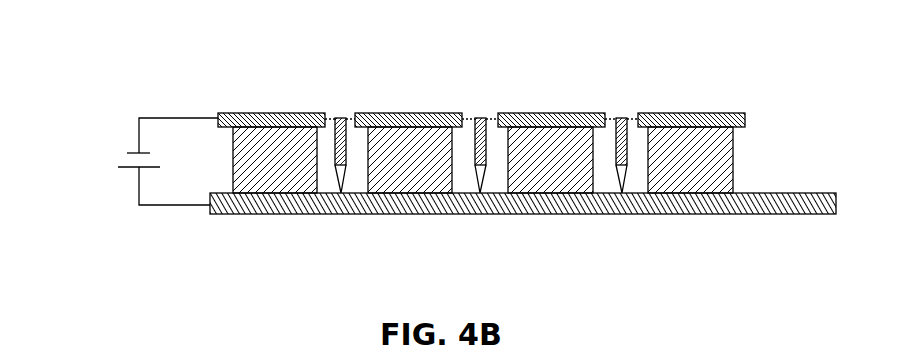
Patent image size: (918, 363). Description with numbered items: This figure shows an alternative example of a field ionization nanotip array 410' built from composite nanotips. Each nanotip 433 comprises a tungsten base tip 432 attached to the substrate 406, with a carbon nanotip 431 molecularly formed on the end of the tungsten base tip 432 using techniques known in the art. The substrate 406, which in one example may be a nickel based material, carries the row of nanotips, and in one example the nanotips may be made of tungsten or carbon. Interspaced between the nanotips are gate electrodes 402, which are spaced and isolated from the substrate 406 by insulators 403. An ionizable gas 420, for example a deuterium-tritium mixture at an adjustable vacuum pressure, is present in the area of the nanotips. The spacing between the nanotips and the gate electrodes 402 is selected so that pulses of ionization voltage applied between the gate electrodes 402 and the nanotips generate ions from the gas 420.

The nanotip array 410' is at (133, 109).
The gate electrode 402 is at (286, 112).
The insulator 403 is at (248, 178).
The substrate 406 is at (748, 200).
The ionizable gas 420 is at (325, 150).
The carbon nanotip 431 is at (340, 117).
The tungsten base tip 432 is at (341, 194).
The nanotip 433 is at (489, 98).